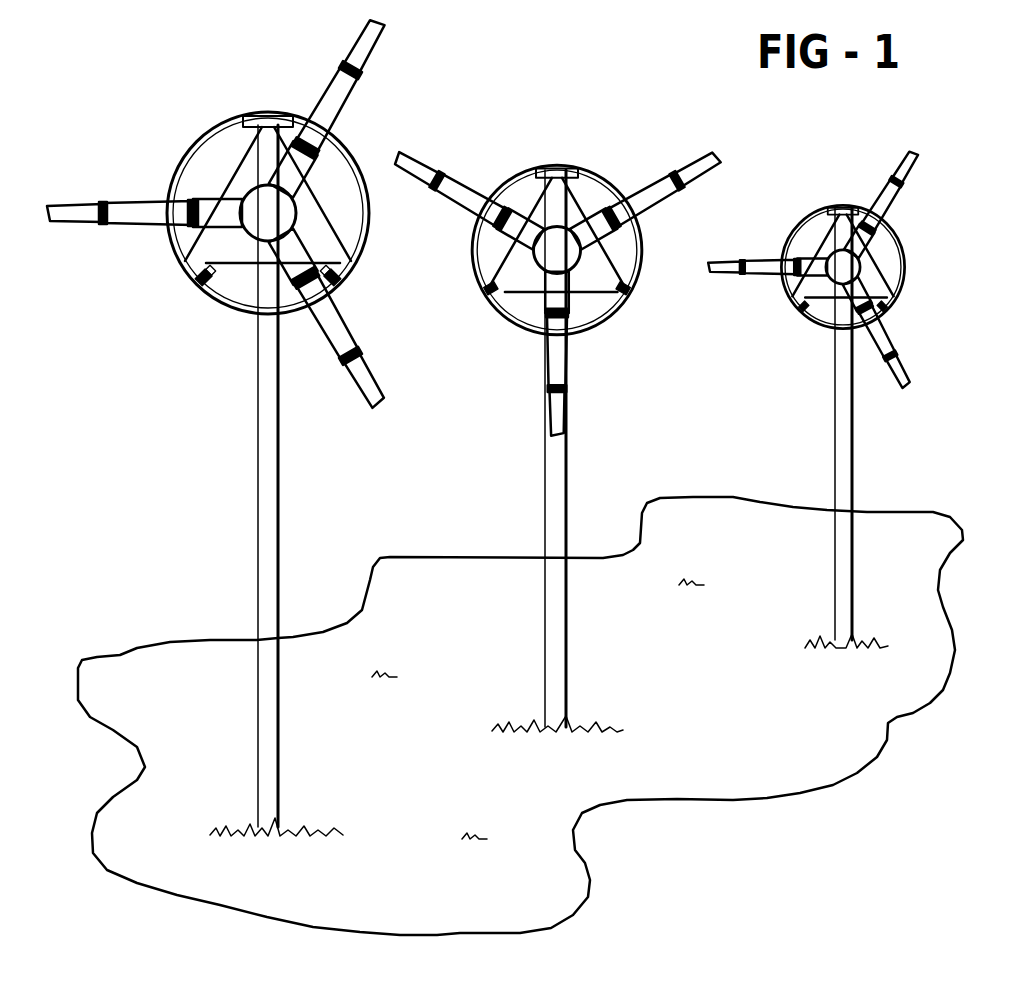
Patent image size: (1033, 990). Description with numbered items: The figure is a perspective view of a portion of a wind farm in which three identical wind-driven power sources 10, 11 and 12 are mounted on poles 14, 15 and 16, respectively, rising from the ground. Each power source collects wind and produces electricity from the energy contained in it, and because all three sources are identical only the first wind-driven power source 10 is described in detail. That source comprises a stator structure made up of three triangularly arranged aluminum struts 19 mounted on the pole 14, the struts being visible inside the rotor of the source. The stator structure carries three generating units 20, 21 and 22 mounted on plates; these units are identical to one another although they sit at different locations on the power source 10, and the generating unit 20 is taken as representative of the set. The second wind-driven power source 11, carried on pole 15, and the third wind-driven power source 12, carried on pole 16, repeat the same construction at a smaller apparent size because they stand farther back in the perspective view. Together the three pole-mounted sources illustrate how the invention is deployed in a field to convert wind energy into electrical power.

The wind-driven power source 10 is at (239, 213).
The wind-driven power source 11 is at (580, 152).
The wind-driven power source 12 is at (847, 195).
The pole 14 is at (258, 367).
The pole 15 is at (543, 457).
The pole 16 is at (835, 390).
The aluminum strut 19 is at (234, 193).
The generating unit 20 is at (243, 296).
The generating unit 21 is at (299, 213).
The generating unit 22 is at (219, 213).